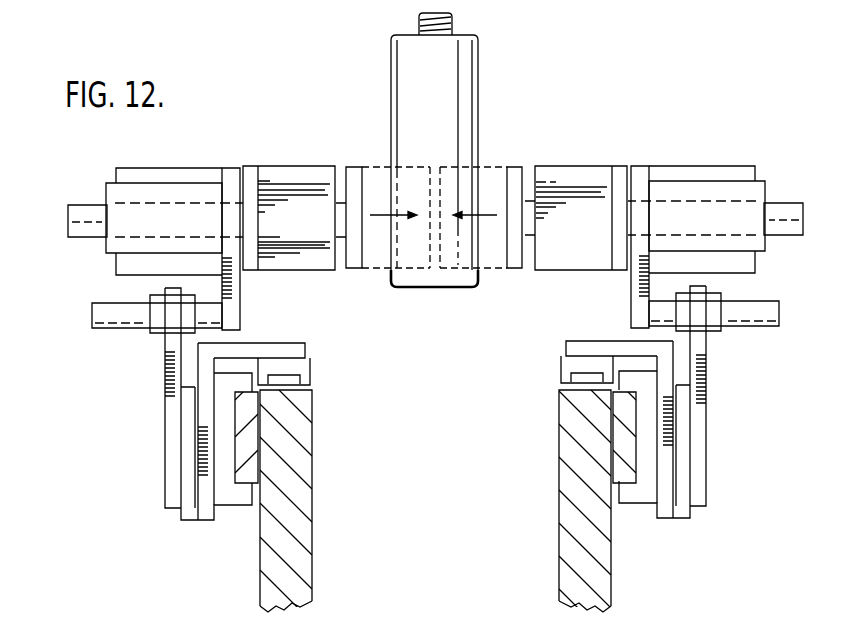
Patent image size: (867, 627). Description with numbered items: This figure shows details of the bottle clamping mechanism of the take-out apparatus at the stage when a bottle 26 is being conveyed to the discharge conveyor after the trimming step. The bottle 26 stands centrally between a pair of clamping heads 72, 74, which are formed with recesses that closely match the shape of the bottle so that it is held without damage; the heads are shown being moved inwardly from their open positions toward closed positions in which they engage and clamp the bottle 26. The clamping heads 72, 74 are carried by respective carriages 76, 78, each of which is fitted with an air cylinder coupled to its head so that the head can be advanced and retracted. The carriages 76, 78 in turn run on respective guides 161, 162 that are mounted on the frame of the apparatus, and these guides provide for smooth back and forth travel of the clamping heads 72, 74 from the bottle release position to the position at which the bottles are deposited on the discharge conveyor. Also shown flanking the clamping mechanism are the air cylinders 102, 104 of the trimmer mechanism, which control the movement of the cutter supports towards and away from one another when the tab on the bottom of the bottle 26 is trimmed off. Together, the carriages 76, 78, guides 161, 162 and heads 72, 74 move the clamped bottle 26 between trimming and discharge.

The plastic moulded bottle 26 is at (469, 86).
The clamping head 72 is at (307, 276).
The clamping head 74 is at (557, 278).
The carriage 76 is at (154, 429).
The carriage 78 is at (712, 447).
The air cylinder 102 is at (116, 268).
The air cylinder 104 is at (711, 166).
The guide 161 is at (250, 437).
The guide 162 is at (622, 416).